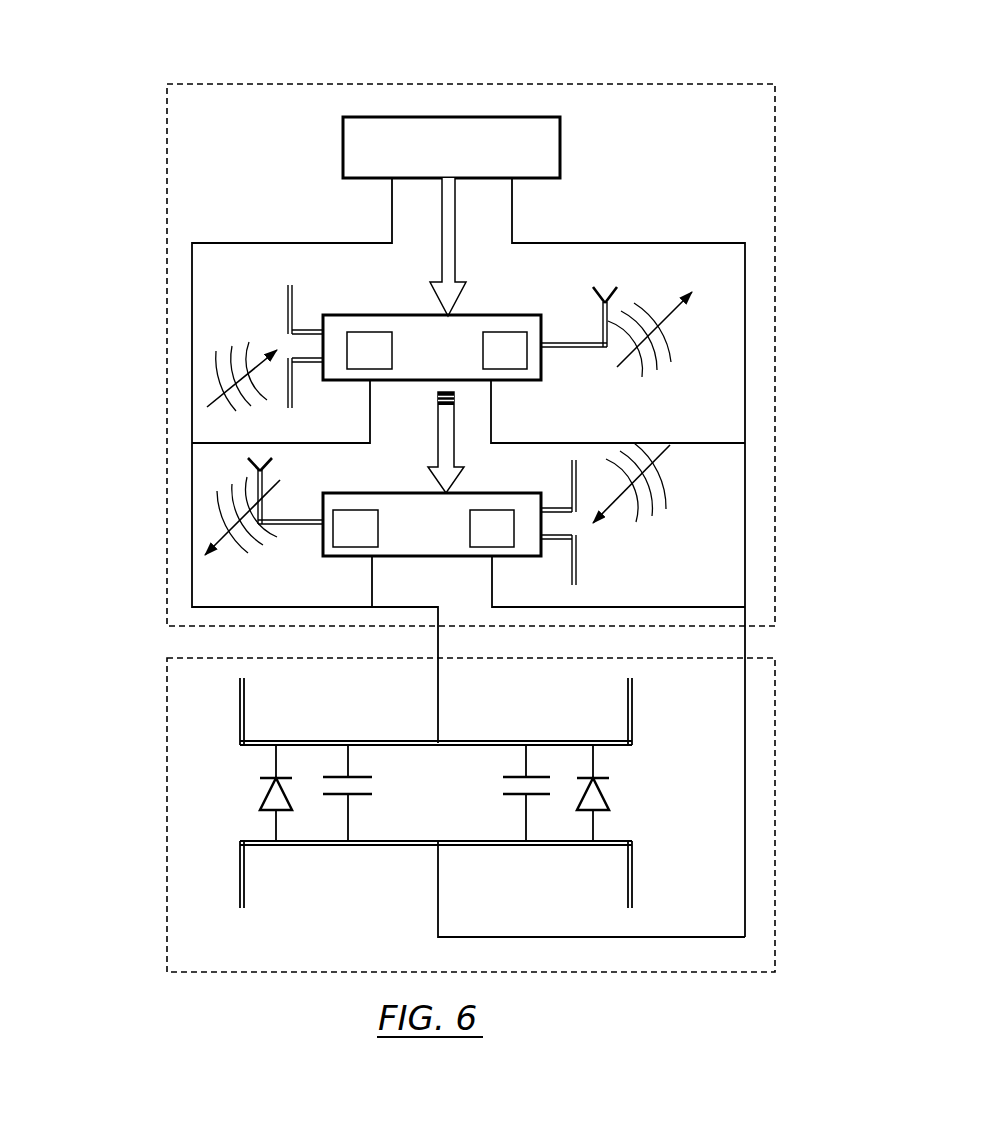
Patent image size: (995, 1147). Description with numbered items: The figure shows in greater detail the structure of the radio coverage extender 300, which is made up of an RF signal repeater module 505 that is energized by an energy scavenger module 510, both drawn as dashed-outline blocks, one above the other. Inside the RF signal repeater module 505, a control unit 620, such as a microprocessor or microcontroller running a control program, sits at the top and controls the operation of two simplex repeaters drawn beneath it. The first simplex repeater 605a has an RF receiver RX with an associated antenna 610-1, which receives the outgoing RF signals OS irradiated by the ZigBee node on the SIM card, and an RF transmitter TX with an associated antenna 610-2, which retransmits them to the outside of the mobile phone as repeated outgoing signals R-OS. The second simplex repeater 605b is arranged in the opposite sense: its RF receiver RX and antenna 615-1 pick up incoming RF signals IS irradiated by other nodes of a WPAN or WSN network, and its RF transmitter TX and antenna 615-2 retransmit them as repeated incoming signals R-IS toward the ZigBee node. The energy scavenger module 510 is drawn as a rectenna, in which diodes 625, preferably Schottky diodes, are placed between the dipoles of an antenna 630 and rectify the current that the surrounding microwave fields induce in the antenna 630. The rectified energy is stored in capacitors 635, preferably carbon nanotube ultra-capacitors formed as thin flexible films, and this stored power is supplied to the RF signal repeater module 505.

The radio coverage extender 300 is at (146, 116).
The RF signal repeater module 505 is at (670, 84).
The energy scavenger module 510 is at (705, 972).
The control unit 620 is at (560, 148).
The first simplex repeater 605a is at (512, 380).
The second simplex repeater 605b is at (333, 556).
The antenna 610-1 is at (277, 330).
The antenna 610-2 is at (590, 305).
The antenna 615-1 is at (577, 523).
The antenna 615-2 is at (254, 519).
The diode 625 is at (253, 793).
The antenna 630 is at (240, 865).
The capacitor 635 is at (505, 797).